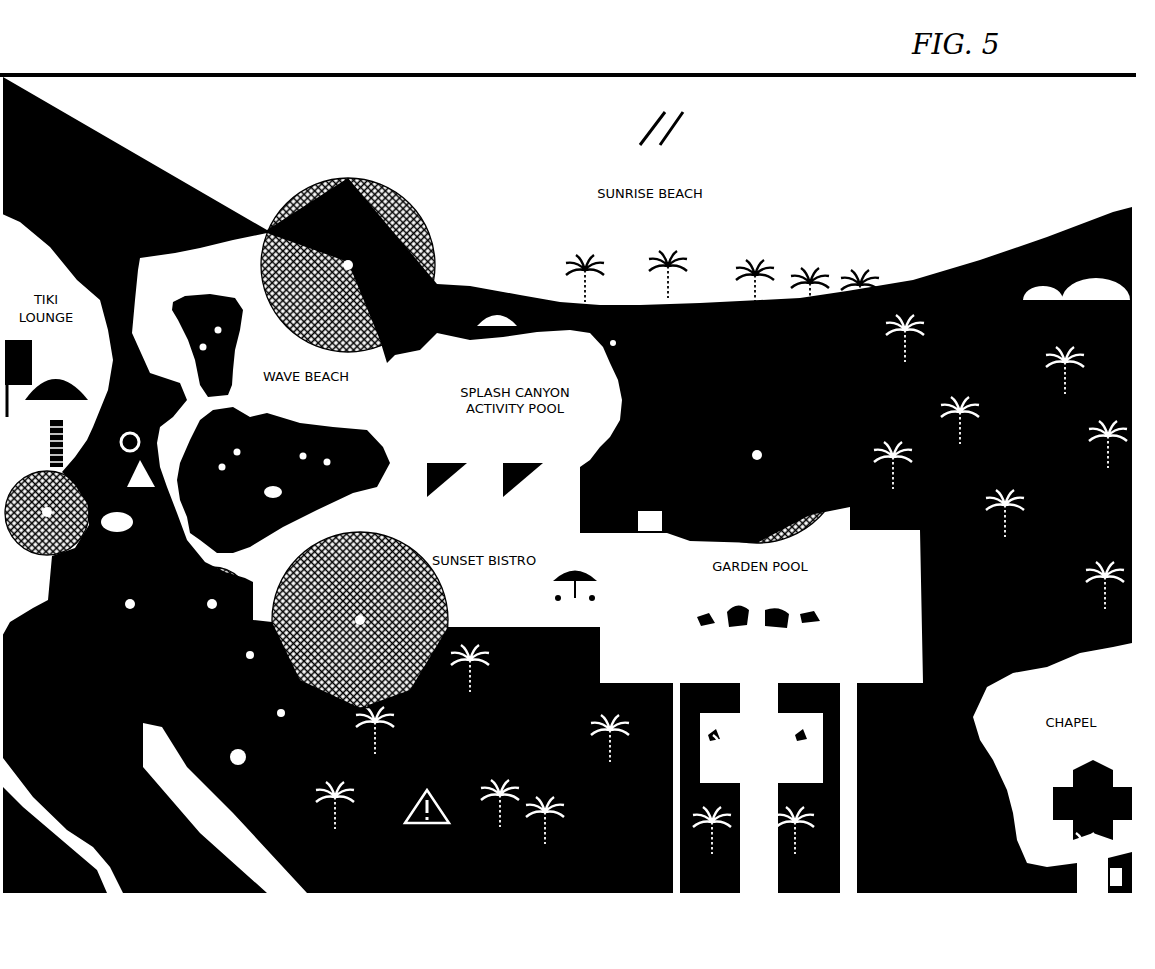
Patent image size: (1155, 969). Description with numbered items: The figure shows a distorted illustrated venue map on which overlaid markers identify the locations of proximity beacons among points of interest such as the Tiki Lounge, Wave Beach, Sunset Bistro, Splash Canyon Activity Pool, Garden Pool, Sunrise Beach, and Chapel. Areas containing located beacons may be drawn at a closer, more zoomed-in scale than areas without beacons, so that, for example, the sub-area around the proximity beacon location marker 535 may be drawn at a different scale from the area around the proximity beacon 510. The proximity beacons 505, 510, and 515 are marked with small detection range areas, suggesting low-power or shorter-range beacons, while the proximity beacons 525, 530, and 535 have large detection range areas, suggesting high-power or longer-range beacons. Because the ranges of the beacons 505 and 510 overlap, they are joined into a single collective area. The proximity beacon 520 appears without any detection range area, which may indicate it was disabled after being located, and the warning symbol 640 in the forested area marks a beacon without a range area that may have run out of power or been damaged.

The proximity beacon 505 is at (130, 607).
The proximity beacon 510 is at (212, 607).
The proximity beacon 515 is at (47, 513).
The proximity beacon 520 is at (259, 758).
The proximity beacon 525 is at (348, 265).
The proximity beacon 530 is at (757, 455).
The proximity beacon location marker 535 is at (360, 620).
The alert indicator 640 is at (427, 819).